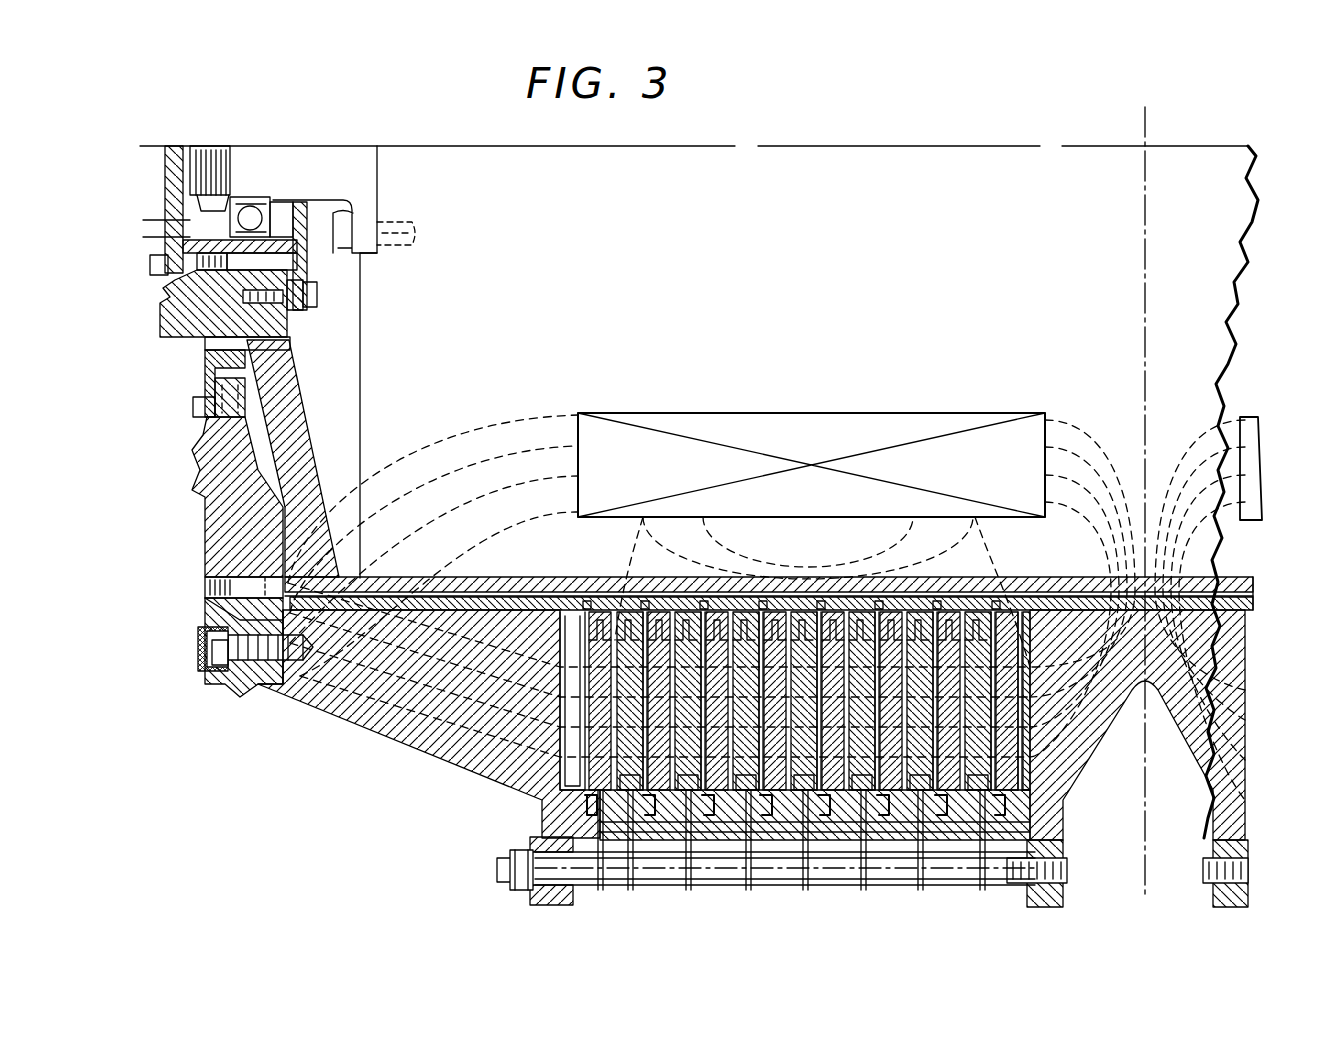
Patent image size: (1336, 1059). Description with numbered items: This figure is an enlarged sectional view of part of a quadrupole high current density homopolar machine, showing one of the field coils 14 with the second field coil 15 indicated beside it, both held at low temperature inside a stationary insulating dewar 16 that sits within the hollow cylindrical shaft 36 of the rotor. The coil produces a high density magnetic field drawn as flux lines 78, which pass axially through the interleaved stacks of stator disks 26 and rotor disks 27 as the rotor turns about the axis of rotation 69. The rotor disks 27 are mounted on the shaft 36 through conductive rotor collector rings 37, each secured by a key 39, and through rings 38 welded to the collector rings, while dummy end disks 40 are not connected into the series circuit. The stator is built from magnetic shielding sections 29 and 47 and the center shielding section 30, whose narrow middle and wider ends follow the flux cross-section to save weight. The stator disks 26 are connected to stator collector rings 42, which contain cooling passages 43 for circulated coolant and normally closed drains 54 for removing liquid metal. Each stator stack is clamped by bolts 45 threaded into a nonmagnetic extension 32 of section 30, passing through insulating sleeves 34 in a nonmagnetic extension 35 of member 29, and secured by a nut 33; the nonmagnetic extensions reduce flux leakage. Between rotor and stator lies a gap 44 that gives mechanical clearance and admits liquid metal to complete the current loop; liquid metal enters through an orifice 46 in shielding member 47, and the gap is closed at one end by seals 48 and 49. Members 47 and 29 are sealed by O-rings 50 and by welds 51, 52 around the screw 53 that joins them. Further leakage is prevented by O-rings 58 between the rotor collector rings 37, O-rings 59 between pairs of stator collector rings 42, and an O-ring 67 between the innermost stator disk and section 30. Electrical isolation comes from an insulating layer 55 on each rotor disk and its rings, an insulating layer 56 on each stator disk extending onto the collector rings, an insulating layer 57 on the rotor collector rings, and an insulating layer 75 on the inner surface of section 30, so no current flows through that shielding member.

The field coil 14 is at (804, 412).
The field coil 15 is at (1227, 387).
The dewar 16 is at (376, 442).
The stator disks 26 is at (563, 714).
The rotor disks 27 is at (570, 722).
The magnetic shielding section 29 is at (327, 670).
The center magnetic shielding section 30 is at (1055, 773).
The nonmagnetic extension 32 is at (1063, 906).
The nut 33 is at (506, 882).
The insulating sleeves 34 is at (586, 888).
The nonmagnetic extension 35 is at (534, 838).
The hollow cylindrical shaft 36 is at (410, 577).
The rotor collector rings 37 is at (588, 600).
The rings 38 is at (627, 600).
The key 39 is at (702, 600).
The end disks 40 is at (538, 790).
The stator collector rings 42 is at (773, 870).
The cooling passages 43 is at (714, 842).
The gap 44 is at (469, 578).
The bolts 45 is at (846, 876).
The orifice 46 is at (204, 582).
The shielding member 47 is at (202, 550).
The seal 48 is at (205, 346).
The seal 49 is at (207, 386).
The O-rings 50 is at (216, 606).
The weld 51 is at (206, 670).
The weld 52 is at (244, 684).
The screw 53 is at (225, 657).
The drains 54 is at (636, 886).
The insulating layer 55 is at (810, 598).
The insulating layer 56 is at (864, 620).
The insulating layer 57 is at (731, 600).
The O-rings 58 is at (664, 600).
The O-rings 59 is at (970, 860).
The O-ring 67 is at (1039, 580).
The axis of rotation 69 is at (1200, 147).
The insulating layer 75 is at (1262, 592).
The flux lines 78 is at (1077, 442).